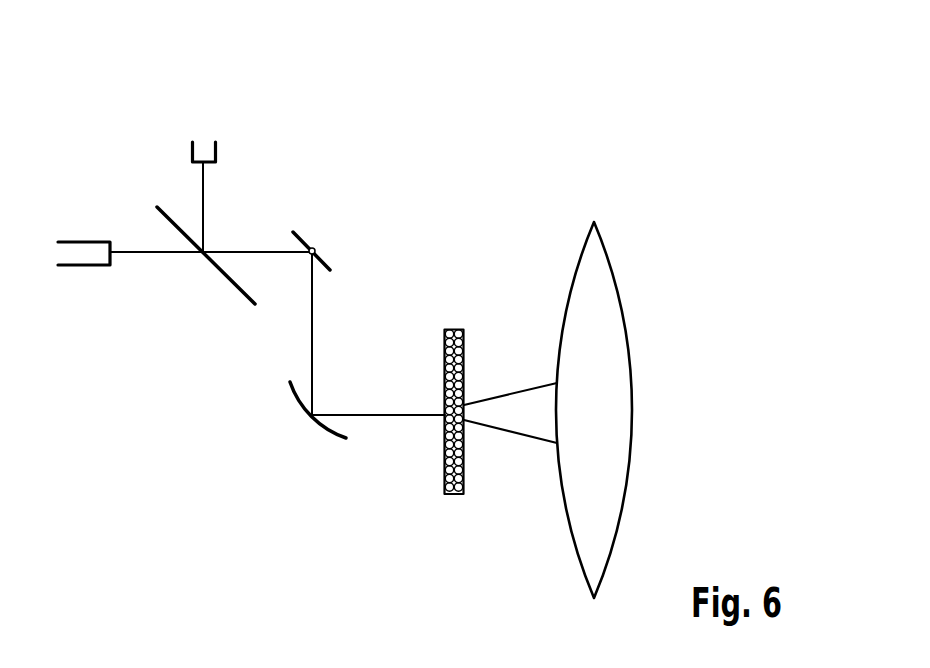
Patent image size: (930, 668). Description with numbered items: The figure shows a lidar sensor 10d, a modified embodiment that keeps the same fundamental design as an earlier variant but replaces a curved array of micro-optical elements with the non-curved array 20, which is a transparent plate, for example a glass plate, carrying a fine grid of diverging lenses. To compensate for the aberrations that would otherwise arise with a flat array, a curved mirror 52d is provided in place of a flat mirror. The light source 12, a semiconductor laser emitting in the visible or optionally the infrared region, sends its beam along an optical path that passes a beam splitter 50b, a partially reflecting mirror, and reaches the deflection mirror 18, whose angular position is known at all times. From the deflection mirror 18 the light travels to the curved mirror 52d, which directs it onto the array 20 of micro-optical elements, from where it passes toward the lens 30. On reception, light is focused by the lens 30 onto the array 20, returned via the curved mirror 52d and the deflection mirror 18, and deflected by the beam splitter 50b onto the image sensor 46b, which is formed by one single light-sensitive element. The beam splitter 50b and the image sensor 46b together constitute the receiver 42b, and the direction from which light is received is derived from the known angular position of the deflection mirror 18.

The lidar sensor 10d is at (372, 152).
The light source 12 is at (82, 242).
The deflection mirror 18 is at (303, 242).
The array of micro-optical elements 20 is at (452, 327).
The lens 30 is at (608, 253).
The receiver 42b is at (205, 133).
The image sensor 46b is at (217, 157).
The beam splitter 50b is at (226, 277).
The curved mirror 52d is at (300, 400).